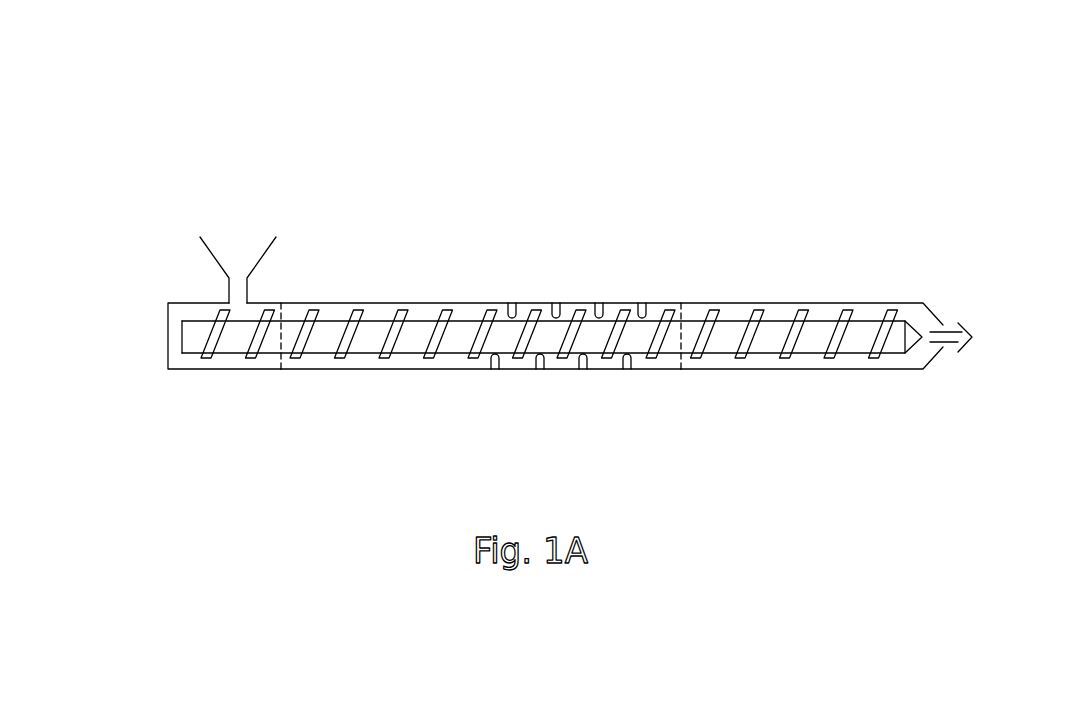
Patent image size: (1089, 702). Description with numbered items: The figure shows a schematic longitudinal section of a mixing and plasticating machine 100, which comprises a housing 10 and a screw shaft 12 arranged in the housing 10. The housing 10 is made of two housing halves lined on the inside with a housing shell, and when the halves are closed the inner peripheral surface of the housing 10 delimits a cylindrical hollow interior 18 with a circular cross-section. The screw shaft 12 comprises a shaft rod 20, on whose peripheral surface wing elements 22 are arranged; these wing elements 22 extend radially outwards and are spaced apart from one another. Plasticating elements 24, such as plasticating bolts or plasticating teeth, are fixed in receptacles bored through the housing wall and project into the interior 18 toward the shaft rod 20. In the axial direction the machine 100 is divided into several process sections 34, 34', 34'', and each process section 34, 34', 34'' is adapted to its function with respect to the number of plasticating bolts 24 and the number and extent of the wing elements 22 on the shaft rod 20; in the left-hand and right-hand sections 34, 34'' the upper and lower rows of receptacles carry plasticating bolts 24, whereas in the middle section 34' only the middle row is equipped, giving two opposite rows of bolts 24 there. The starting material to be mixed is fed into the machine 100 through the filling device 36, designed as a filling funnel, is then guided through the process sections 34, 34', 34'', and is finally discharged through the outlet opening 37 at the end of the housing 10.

The mixing and plasticating machine 100 is at (703, 140).
The housing 10 is at (613, 303).
The screw shaft 12 is at (193, 333).
The hollow interior 18 is at (312, 360).
The shaft rod 20 is at (817, 333).
The wing elements 22 is at (752, 312).
The plasticating elements 24 is at (597, 303).
The process section 34 is at (224, 376).
The process section 34' is at (481, 376).
The process section 34'' is at (812, 398).
The filling device 36 is at (237, 258).
The outlet opening 37 is at (953, 350).